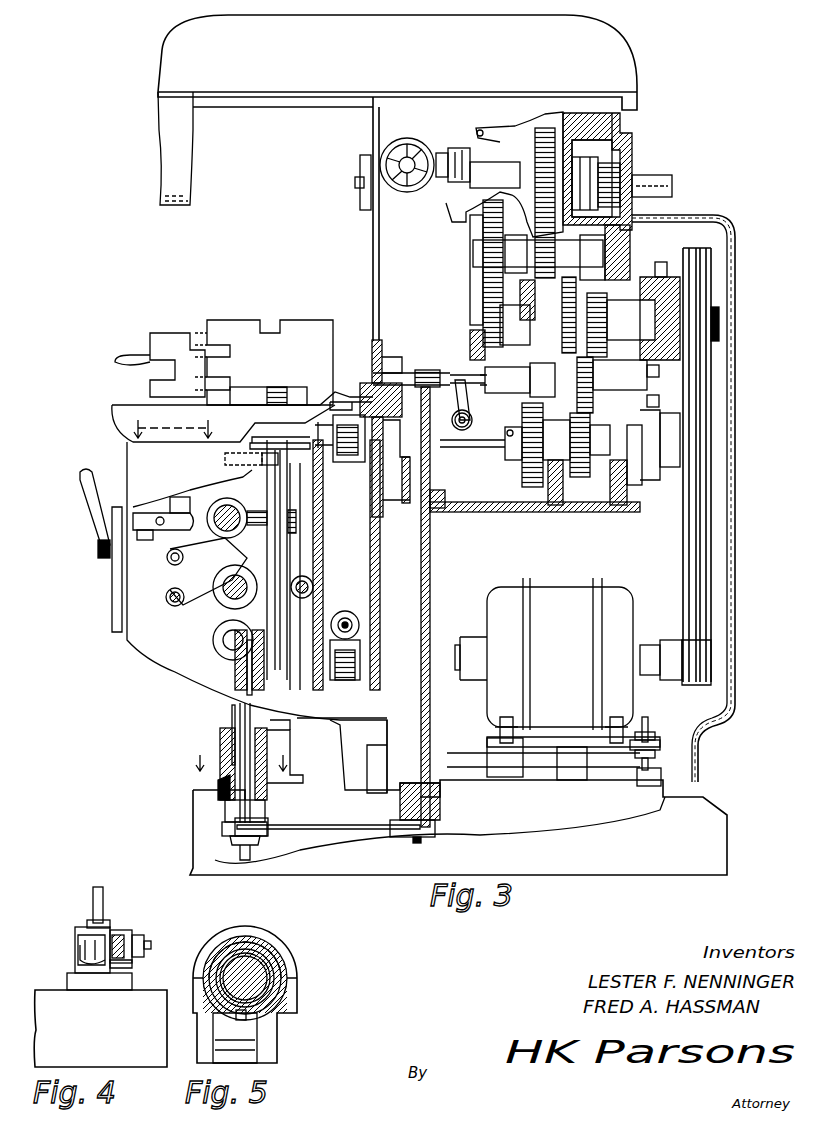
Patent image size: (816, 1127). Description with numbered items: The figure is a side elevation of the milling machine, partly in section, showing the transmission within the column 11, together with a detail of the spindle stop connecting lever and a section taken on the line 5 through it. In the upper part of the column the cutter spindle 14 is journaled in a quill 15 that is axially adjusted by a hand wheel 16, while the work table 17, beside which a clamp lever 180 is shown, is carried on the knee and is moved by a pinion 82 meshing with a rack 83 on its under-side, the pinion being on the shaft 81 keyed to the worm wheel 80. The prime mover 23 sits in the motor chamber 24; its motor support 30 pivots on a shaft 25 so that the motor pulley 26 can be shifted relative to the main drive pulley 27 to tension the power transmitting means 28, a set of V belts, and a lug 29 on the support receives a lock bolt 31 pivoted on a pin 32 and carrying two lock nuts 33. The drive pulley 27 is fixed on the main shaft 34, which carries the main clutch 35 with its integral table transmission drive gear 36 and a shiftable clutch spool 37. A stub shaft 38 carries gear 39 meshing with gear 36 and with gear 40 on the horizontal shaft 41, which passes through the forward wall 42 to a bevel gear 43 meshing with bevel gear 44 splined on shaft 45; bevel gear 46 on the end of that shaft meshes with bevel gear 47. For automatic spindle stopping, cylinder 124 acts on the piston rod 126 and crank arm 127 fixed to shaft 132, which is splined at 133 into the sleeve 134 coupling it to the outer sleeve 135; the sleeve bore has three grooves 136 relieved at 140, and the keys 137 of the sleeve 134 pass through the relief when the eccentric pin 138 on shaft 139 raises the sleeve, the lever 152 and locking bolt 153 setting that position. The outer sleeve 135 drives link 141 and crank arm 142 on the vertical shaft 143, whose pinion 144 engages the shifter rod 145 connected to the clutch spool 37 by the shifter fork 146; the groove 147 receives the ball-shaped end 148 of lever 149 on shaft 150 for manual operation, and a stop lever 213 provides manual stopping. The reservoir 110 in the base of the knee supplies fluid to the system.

In FIG. 3, the cutter spindle 14 is at (362, 155).
In FIG. 3, the hand wheel 16 is at (418, 142).
In FIG. 3, the quill 15 is at (470, 200).
In FIG. 3, the work table 17 is at (212, 320).
In FIG. 3, the clamp lever 180 is at (155, 350).
In FIG. 3, the rack 83 is at (245, 387).
In FIG. 3, the pinion 82 is at (287, 387).
In FIG. 3, the forward wall 42 is at (375, 345).
In FIG. 3, the shifter rod 145 is at (455, 372).
In FIG. 3, the pinion 144 is at (448, 368).
In FIG. 3, the groove 147 is at (465, 375).
In FIG. 3, the clutch spool 37 is at (505, 380).
In FIG. 3, the ball-shaped end 148 is at (466, 390).
In FIG. 3, the shifter fork 146 is at (538, 397).
In FIG. 3, the lever 149 is at (469, 418).
In FIG. 3, the shaft 150 is at (470, 425).
In FIG. 3, the main clutch 35 is at (648, 277).
In FIG. 3, the table transmission drive gear 36 is at (605, 330).
In FIG. 3, the gear 39 is at (562, 290).
In FIG. 3, the main drive pulley 27 is at (713, 258).
In FIG. 3, the main shaft 34 is at (720, 315).
In FIG. 3, the stub shaft 38 is at (647, 380).
In FIG. 3, the bevel gear 43 is at (365, 447).
In FIG. 3, the bevel gear 44 is at (327, 470).
In FIG. 3, the shaft 81 is at (275, 470).
In FIG. 3, the worm wheel 80 is at (298, 520).
In FIG. 3, the horizontal shaft 41 is at (480, 447).
In FIG. 3, the gear 40 is at (577, 482).
In FIG. 3, the motor chamber 24 is at (480, 513).
In FIG. 3, the power transmitting means 28 is at (702, 532).
In FIG. 3, the splined shaft 45 is at (352, 565).
In FIG. 3, the vertical shaft 143 is at (431, 580).
In FIG. 3, the prime mover 23 is at (560, 590).
In FIG. 3, the bevel gear 47 is at (360, 620).
In FIG. 3, the bevel gear 46 is at (365, 640).
In FIG. 3, the cylinder 124 is at (220, 628).
In FIG. 3, the piston rod 126 is at (238, 645).
In FIG. 3, the crank arm 127 is at (250, 660).
In FIG. 3, the reservoir 110 is at (305, 680).
In FIG. 3, the shaft 132 is at (240, 715).
In FIG. 3, the sleeve 134 is at (220, 740).
In FIG. 4, the sleeve 134 is at (108, 923).
In FIG. 5, the sleeve 134 is at (272, 990).
In FIG. 3, the splined portion 133 is at (232, 772).
In FIG. 4, the splined portion 133 is at (104, 900).
In FIG. 5, the splined portion 133 is at (250, 955).
In FIG. 3, the outer sleeve 135 is at (225, 810).
In FIG. 5, the outer sleeve 135 is at (280, 955).
In FIG. 3, the link 141 is at (345, 829).
In FIG. 3, the crank arm 142 is at (435, 835).
In FIG. 3, the motor support 30 is at (495, 740).
In FIG. 3, the shaft 25 is at (468, 760).
In FIG. 3, the lock bolt 31 is at (646, 717).
In FIG. 3, the lock nuts 33 is at (652, 732).
In FIG. 3, the lug 29 is at (656, 740).
In FIG. 3, the pin 32 is at (652, 770).
In FIG. 3, the motor pulley 26 is at (711, 640).
In FIG. 3, the stop lever 213 is at (80, 490).
In FIG. 3, the column 11 is at (172, 423).
In FIG. 3, the section line 5 is at (241, 756).
In FIG. 4, the lever 152 is at (125, 932).
In FIG. 4, the locking bolt 153 is at (148, 938).
In FIG. 4, the eccentric pin 138 is at (100, 960).
In FIG. 5, the eccentric pin 138 is at (258, 1030).
In FIG. 4, the shaft 139 is at (135, 963).
In FIG. 5, the shaft 139 is at (260, 1045).
In FIG. 5, the splined grooves 136 is at (235, 935).
In FIG. 5, the relieved space 140 is at (290, 950).
In FIG. 5, the keys 137 is at (275, 985).